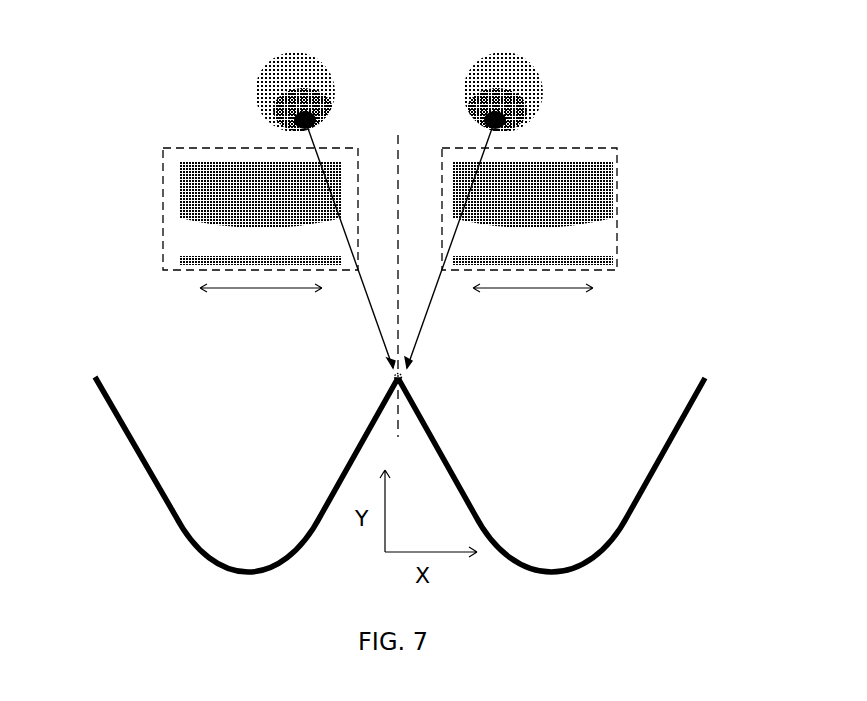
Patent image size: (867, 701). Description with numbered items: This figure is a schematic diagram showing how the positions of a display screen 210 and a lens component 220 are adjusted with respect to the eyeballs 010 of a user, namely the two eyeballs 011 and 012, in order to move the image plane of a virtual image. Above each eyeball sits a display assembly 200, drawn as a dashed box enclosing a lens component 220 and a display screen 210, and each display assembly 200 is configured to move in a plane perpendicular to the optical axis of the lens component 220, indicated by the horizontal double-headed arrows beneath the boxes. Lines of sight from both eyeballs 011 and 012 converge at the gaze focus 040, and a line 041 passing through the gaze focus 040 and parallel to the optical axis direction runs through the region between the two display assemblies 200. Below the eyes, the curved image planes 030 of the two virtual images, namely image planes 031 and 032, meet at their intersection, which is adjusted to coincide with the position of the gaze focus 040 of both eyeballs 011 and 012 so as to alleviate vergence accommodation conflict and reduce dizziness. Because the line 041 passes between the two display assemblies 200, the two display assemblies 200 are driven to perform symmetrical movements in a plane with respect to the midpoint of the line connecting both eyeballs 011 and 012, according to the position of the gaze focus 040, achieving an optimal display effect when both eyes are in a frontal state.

The eyes of user 010 is at (306, 69).
The eyeball 011 is at (495, 65).
The eyeball 012 is at (275, 85).
The display assembly 200 is at (163, 260).
The display screen 210 is at (240, 258).
The lens component 220 is at (238, 193).
The free-form reflecting surfaces 030 is at (400, 474).
The image plane 031 is at (655, 478).
The image plane 032 is at (337, 493).
The gaze focus 040 is at (393, 372).
The line 041 is at (398, 317).